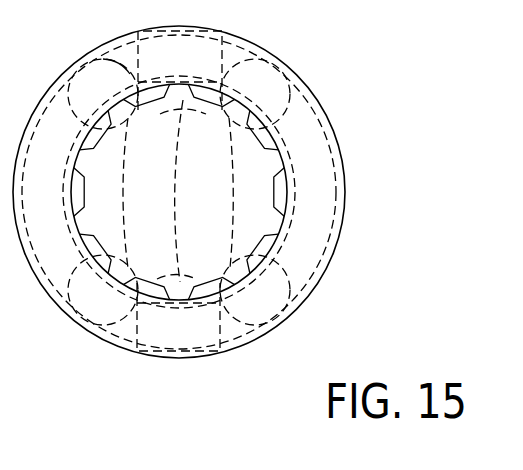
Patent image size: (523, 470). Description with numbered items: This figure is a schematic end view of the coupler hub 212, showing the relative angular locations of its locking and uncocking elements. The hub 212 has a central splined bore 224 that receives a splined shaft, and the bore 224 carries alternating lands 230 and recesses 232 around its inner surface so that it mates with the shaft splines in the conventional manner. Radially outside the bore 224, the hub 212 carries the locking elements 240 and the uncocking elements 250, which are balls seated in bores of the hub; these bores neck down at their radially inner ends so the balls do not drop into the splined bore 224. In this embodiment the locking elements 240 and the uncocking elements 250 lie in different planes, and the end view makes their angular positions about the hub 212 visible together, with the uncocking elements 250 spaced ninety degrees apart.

The hub 212 is at (345, 150).
The splined bore 224 is at (280, 229).
The land 230 is at (286, 199).
The recess 232 is at (283, 161).
The locking element 240 is at (179, 191).
The uncocking element 250 is at (179, 193).